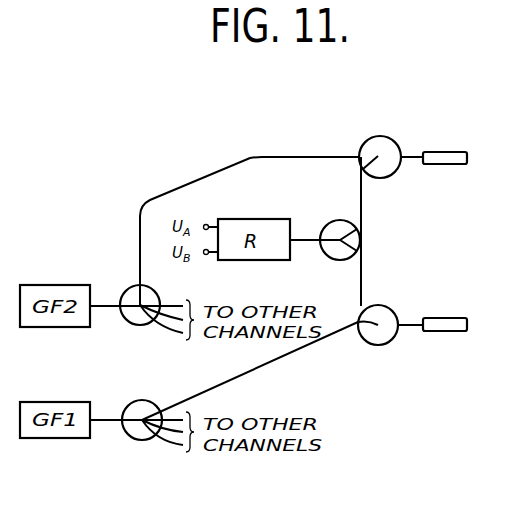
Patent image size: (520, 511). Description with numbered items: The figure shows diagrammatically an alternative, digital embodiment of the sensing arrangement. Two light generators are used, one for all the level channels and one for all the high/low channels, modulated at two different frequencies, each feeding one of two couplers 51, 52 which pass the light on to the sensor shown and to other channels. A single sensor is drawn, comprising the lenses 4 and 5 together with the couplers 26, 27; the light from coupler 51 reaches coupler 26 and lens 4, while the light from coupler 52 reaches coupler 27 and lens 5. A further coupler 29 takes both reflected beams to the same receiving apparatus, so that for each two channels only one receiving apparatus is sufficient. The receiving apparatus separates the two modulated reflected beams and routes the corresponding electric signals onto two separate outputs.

The coupler 26 is at (381, 136).
The coupler 27 is at (408, 305).
The further coupler 29 is at (334, 224).
The lens 4 is at (450, 151).
The lens 5 is at (446, 318).
The coupler 51 is at (131, 286).
The coupler 52 is at (136, 400).